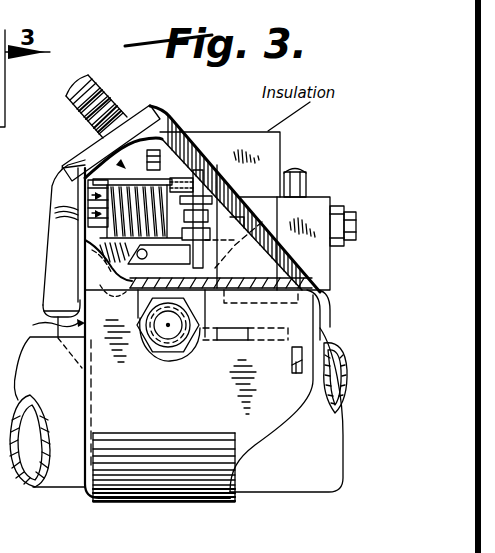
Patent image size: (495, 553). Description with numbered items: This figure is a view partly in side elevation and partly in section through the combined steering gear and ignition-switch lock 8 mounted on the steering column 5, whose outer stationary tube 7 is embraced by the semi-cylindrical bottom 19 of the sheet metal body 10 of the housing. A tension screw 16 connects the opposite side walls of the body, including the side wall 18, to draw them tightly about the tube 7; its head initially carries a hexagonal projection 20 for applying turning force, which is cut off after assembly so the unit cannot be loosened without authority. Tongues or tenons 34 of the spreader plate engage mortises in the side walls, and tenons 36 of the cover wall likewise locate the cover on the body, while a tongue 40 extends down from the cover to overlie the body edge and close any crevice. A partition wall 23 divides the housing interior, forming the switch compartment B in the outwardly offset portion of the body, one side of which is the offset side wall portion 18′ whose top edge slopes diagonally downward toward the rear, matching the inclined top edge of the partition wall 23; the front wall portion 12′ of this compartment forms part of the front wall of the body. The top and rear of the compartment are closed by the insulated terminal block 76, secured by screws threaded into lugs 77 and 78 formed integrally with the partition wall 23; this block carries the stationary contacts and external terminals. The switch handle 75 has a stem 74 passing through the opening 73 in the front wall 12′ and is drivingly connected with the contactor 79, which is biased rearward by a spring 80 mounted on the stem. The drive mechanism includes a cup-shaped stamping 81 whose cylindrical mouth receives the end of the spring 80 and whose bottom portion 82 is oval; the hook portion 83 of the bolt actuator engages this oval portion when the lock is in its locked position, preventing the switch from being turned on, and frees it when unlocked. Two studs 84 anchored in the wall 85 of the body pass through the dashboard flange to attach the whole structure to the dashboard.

The studs 84 is at (90, 82).
The wall of the body 85 is at (135, 111).
The lug 78 is at (168, 135).
The bottom portion of cup-shaped stamping 82 is at (201, 148).
The insulated terminal block 76 is at (288, 160).
The contactor 79 is at (220, 184).
The cup-shaped stamping 81 is at (233, 217).
The lug 77 is at (292, 266).
The tongue 40 is at (334, 314).
The hook portion 83 is at (210, 291).
The tongues or tenons 34 is at (245, 343).
The tongues or tenons 36 is at (293, 373).
The hexagonal projection 20 is at (180, 357).
The tension screw 16 is at (166, 334).
The side wall 18 is at (172, 400).
The combined steering gear and ignition-switch lock 8 is at (133, 506).
The semi-cylindrical bottom 19 is at (152, 503).
The steering column 5 is at (55, 491).
The outer stationary tube 7 is at (272, 492).
The partition 12′ is at (45, 324).
The switch handle 75 is at (55, 276).
The stem 74 is at (92, 222).
The spring 80 is at (56, 212).
The opening 73 is at (96, 198).
The body 10 is at (73, 158).
The switch compartment B is at (118, 162).
The offset side wall portion 18′ is at (13, 148).
The partition wall 23 is at (149, 255).